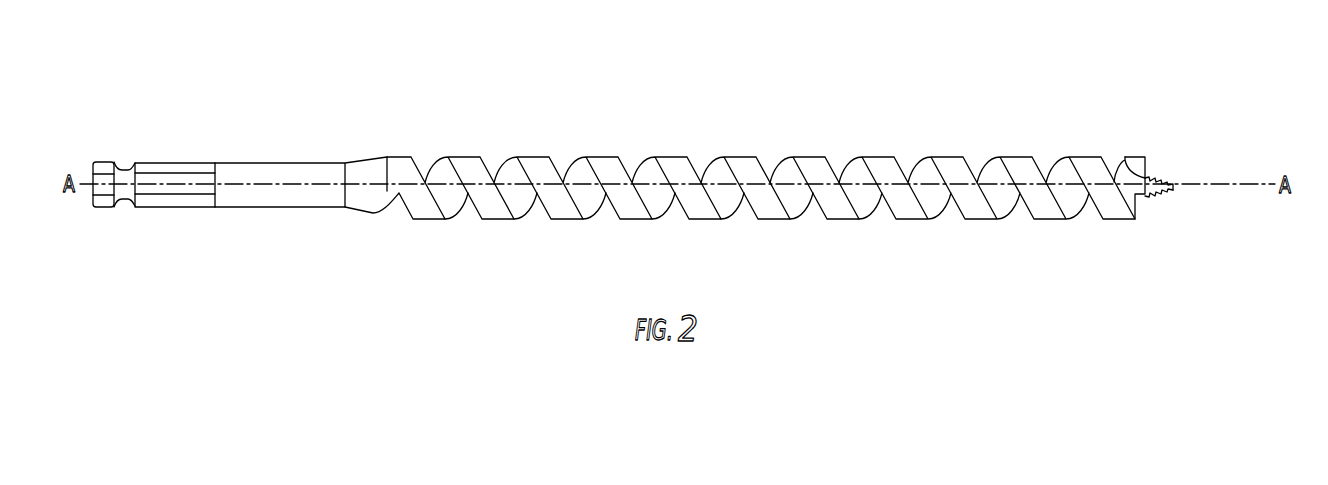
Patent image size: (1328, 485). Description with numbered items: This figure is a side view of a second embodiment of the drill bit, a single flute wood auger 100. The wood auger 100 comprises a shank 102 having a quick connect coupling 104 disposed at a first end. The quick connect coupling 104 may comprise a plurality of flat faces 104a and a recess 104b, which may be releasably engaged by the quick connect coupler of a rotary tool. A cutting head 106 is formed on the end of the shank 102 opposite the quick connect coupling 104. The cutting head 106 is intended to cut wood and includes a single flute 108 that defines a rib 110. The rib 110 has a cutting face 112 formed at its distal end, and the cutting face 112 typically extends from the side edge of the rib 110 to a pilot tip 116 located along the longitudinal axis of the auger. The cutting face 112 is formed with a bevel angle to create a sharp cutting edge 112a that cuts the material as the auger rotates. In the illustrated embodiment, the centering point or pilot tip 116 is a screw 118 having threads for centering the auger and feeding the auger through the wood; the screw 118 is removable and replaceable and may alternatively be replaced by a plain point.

The single flute wood auger 100 is at (1183, 107).
The shank 102 is at (273, 162).
The quick connect coupling 104 is at (142, 136).
The flat faces 104a is at (215, 194).
The recess 104b is at (131, 165).
The cutting head 106 is at (966, 132).
The single flute 108 is at (714, 169).
The rib 110 is at (808, 167).
The cutting face 112 is at (1160, 150).
The sharp cutting edge 112a is at (1141, 157).
The pilot tip 116 is at (1174, 171).
The screw 118 is at (1163, 193).